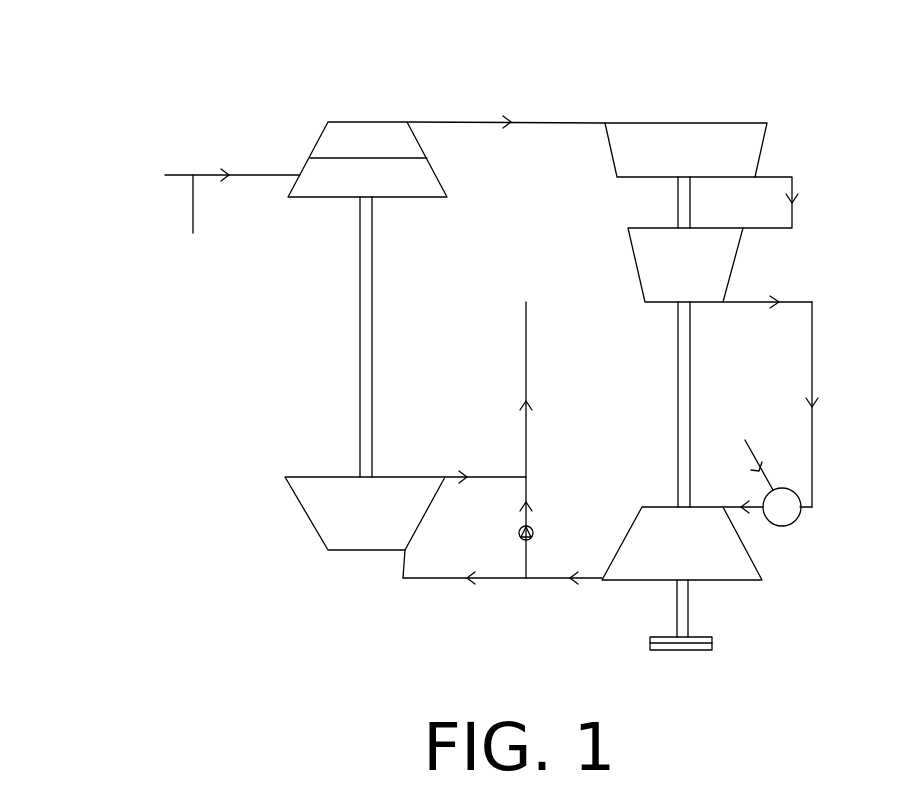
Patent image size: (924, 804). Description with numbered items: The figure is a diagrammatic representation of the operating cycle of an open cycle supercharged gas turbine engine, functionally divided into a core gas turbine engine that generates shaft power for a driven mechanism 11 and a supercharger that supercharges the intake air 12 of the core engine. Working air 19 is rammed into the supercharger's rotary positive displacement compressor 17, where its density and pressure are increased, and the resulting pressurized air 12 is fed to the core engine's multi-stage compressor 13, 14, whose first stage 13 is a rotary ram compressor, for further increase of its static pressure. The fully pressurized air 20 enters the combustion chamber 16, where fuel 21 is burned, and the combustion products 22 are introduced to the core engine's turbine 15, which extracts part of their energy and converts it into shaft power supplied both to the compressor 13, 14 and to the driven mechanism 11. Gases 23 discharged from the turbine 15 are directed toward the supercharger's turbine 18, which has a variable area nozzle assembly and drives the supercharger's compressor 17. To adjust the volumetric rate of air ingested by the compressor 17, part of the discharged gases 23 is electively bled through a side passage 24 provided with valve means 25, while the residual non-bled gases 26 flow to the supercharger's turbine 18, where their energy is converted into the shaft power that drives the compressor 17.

The driven mechanism 11 is at (710, 643).
The intake air 12 is at (537, 122).
The first stage compressor 13 is at (732, 155).
The compressor stage 14 is at (702, 268).
The turbine 15 is at (713, 557).
The combustion chamber 16 is at (782, 508).
The rotary positive displacement compressor 17 is at (367, 175).
The turbine 18 is at (355, 519).
The air 19 is at (232, 224).
The fully pressurized air 20 is at (812, 368).
The fuel 21 is at (750, 448).
The combustion products 22 is at (738, 505).
The discharged gases 23 is at (565, 578).
The side passage 24 is at (526, 555).
The valve means 25 is at (518, 528).
The residual discharged gases 26 is at (402, 578).